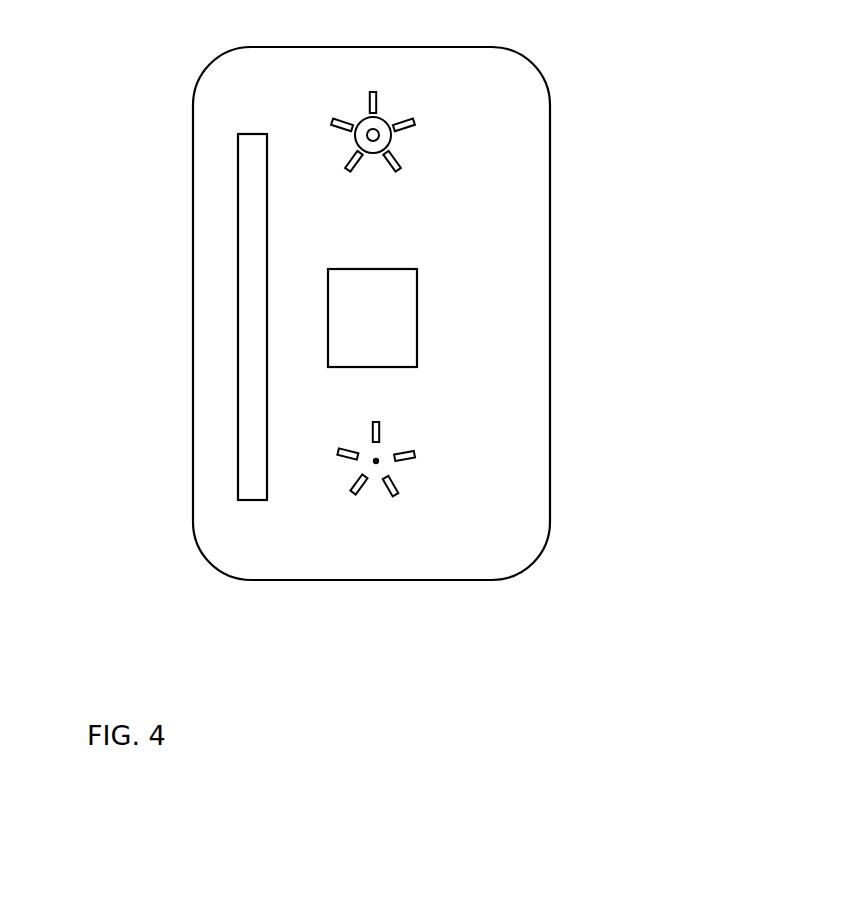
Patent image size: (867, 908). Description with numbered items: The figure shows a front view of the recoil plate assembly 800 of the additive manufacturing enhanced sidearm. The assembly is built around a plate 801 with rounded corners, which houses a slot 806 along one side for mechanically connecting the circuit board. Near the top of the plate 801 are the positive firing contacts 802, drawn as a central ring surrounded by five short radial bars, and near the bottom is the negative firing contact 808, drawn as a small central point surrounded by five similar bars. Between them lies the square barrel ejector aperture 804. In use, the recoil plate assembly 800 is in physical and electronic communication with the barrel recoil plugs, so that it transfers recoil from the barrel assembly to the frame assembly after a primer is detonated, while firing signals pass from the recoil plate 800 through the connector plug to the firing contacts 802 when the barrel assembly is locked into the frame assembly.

The recoil plate assembly 800 is at (603, 646).
The plate 801 is at (466, 303).
The positive firing contacts 802 is at (557, 176).
The barrel ejector aperture 804 is at (534, 365).
The slot 806 is at (148, 317).
The negative firing contact 808 is at (213, 515).